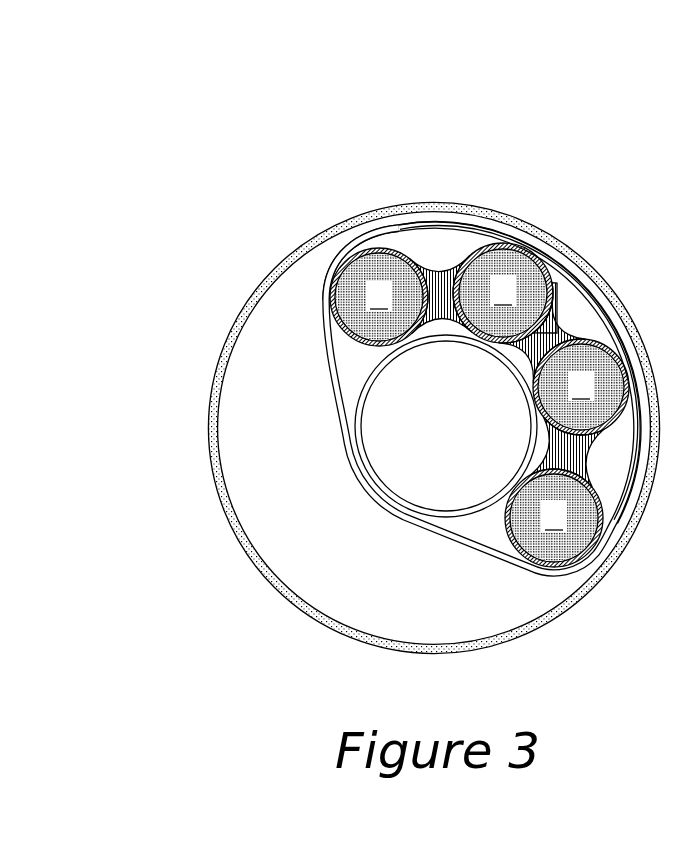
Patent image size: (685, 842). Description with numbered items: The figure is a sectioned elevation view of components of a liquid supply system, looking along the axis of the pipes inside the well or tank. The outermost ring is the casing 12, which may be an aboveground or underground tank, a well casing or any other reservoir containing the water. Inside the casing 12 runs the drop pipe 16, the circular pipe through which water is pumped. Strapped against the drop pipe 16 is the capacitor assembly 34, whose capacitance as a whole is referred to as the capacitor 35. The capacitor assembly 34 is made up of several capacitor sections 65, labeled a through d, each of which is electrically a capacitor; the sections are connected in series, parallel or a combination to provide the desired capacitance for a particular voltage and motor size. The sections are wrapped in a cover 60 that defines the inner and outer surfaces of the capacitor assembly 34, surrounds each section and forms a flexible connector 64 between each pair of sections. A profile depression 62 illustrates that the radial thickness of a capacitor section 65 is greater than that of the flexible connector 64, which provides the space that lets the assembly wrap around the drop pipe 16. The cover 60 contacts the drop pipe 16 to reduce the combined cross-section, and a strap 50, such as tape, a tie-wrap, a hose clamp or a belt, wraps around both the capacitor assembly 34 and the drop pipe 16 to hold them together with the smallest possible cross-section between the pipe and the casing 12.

The casing 12 is at (207, 413).
The drop pipe 16 is at (365, 383).
The capacitor assembly 34 is at (557, 279).
The capacitor 35 is at (517, 102).
The strap 50 is at (322, 345).
The cover 60 is at (338, 266).
The profile depression 62 is at (424, 248).
The flexible connector 64 is at (440, 288).
The capacitor section 65 is at (520, 267).